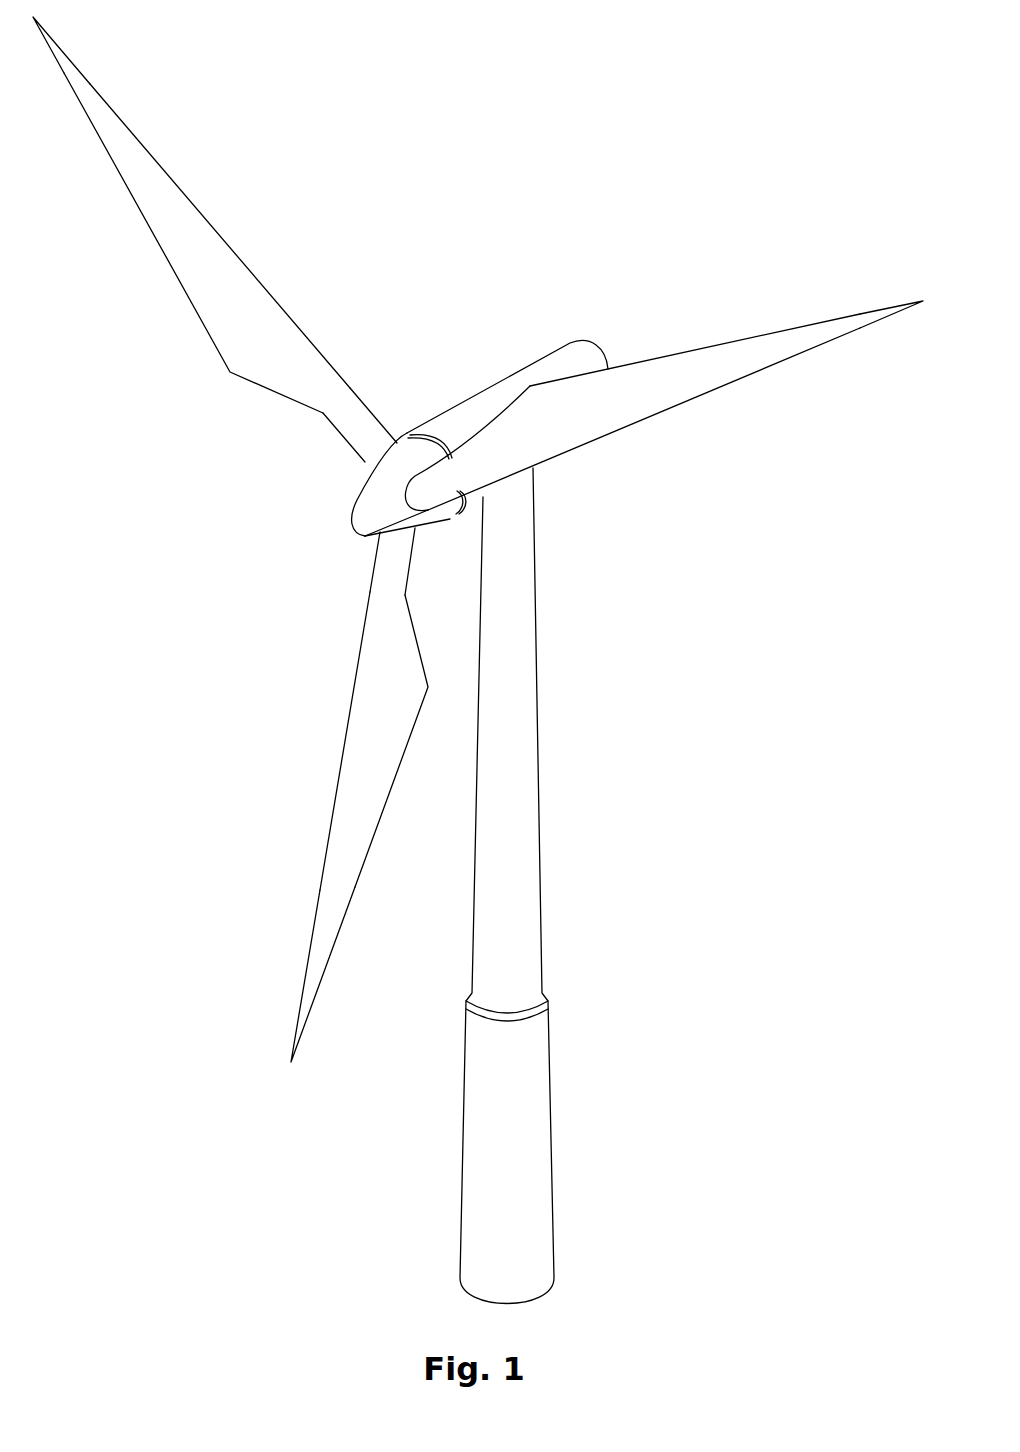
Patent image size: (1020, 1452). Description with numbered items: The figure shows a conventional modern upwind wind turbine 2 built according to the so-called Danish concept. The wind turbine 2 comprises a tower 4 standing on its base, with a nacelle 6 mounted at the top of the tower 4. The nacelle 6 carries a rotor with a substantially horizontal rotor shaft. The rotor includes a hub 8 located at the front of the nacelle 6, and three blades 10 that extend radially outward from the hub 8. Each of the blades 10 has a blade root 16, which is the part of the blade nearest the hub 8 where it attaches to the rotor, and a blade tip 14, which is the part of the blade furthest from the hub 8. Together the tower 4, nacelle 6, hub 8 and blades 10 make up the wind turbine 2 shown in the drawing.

The wind turbine 2 is at (656, 822).
The tower 4 is at (527, 737).
The nacelle 6 is at (468, 412).
The hub 8 is at (367, 505).
The blades 10 is at (247, 342).
The blade tip 14 is at (80, 78).
The blade root 16 is at (377, 455).